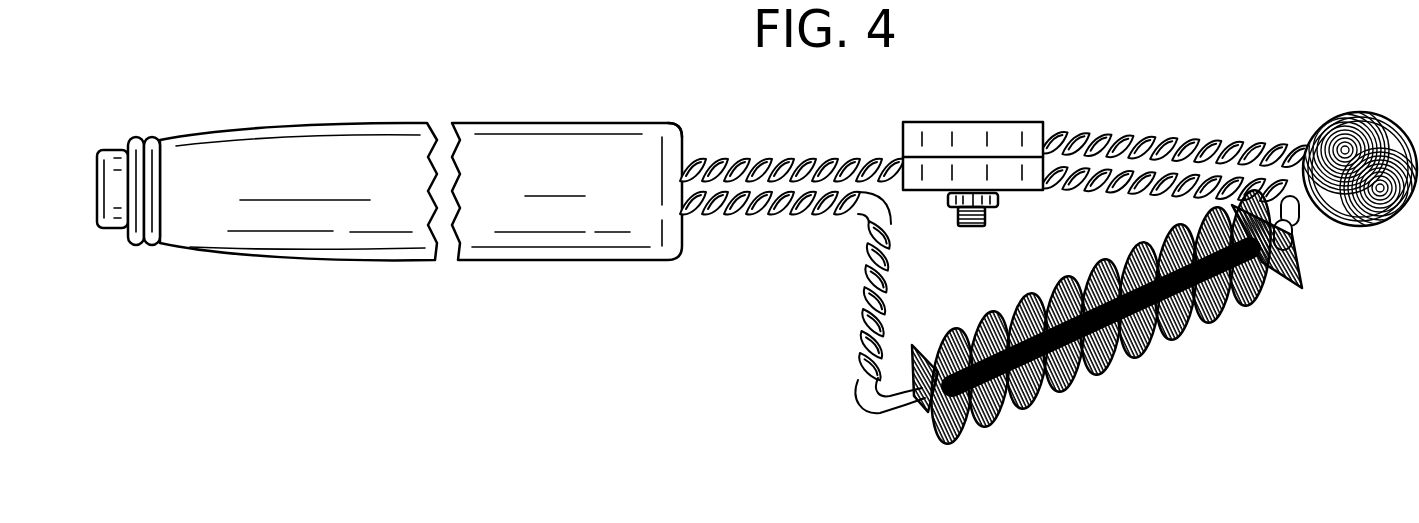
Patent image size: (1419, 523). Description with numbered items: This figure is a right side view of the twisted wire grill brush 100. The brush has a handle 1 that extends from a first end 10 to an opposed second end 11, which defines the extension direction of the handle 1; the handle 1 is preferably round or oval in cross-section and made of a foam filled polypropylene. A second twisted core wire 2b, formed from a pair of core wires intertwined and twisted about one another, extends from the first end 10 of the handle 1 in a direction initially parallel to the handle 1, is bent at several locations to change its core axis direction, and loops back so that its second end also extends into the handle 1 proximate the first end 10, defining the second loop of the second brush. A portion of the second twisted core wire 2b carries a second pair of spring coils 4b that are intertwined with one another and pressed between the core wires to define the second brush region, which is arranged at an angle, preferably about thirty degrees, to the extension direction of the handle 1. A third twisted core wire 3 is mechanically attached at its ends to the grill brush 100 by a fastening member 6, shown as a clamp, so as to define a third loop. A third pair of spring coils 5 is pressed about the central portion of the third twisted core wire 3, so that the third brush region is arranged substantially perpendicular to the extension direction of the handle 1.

The twisted wire grill brush 100 is at (913, 100).
The handle 1 is at (555, 123).
The second end 11 is at (97, 228).
The first end 10 is at (684, 130).
The second twisted core wire 2b is at (770, 160).
The third twisted core wire 3 is at (1130, 131).
The fastening member 6 is at (968, 121).
The third pair of spring coils 5 is at (1361, 113).
The second pair of spring coils 4b is at (1138, 362).